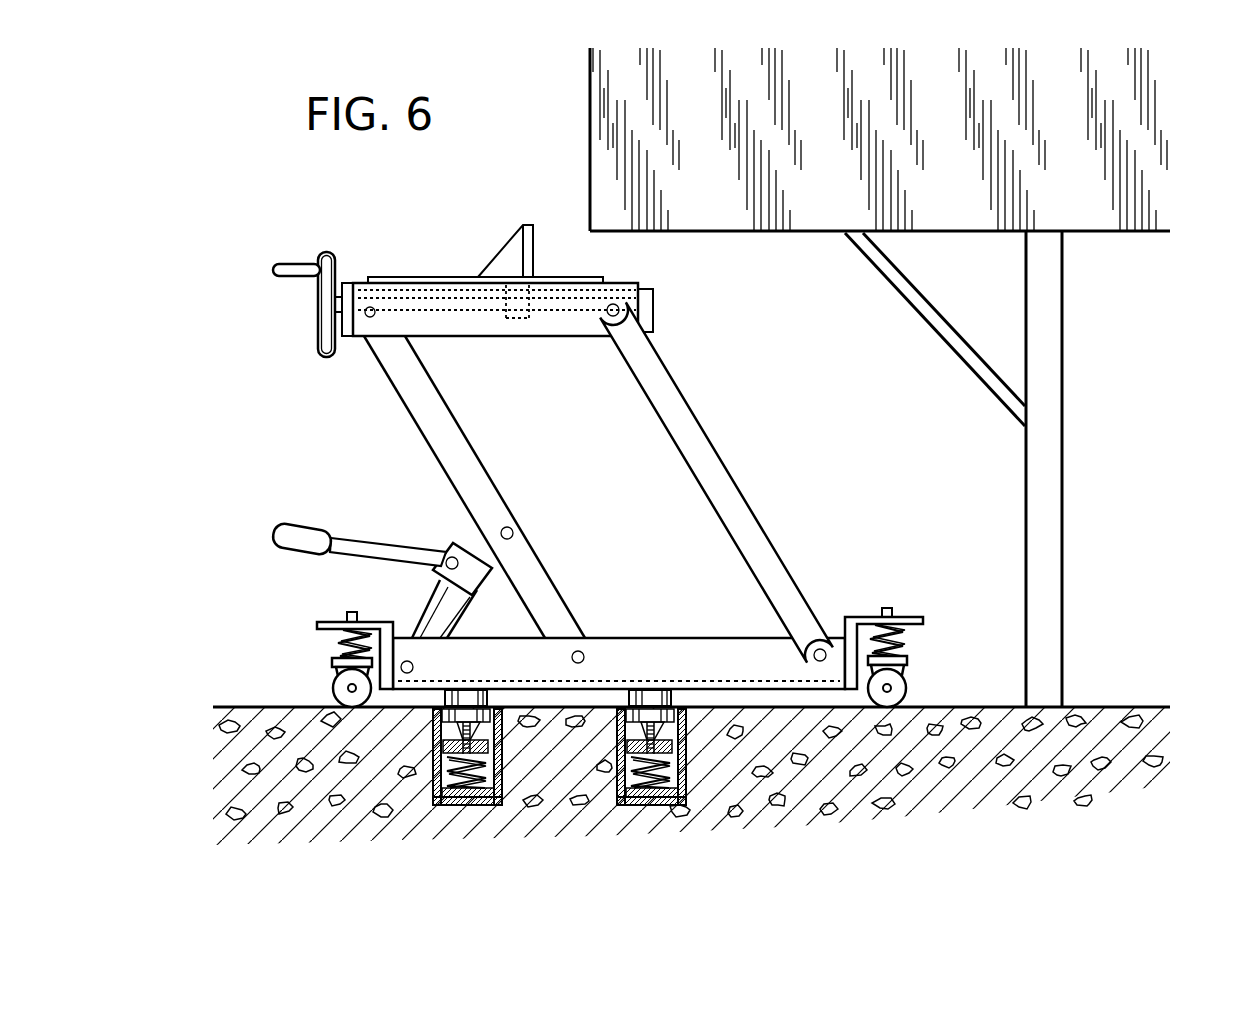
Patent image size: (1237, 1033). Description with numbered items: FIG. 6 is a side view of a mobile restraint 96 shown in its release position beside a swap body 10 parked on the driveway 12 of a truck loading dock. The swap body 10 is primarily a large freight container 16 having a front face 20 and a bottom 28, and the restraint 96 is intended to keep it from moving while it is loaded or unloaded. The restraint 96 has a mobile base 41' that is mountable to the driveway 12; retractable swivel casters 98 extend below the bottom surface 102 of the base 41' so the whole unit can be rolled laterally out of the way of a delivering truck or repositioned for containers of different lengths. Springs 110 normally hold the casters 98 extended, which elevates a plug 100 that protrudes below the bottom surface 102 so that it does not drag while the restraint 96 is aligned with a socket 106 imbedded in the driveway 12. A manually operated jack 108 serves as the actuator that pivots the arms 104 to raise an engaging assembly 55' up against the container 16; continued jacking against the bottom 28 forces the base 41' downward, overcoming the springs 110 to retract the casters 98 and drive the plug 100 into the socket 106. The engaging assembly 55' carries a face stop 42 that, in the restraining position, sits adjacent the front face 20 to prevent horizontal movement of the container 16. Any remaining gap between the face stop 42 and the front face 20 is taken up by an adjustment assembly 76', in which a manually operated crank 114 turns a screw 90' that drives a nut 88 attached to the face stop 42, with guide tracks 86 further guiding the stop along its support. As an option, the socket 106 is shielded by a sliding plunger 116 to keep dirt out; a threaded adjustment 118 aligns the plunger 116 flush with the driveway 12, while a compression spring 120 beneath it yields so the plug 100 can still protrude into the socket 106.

The swap body 10 is at (1137, 290).
The driveway 12 is at (1134, 704).
The freight container 16 is at (998, 235).
The front face 20 is at (590, 197).
The bottom 28 is at (760, 234).
The mobile base 41' is at (619, 640).
The face stop 42 is at (503, 250).
The engaging assembly 55' is at (244, 341).
The adjustment assembly 76' is at (298, 332).
The guide tracks 86 is at (567, 276).
The nut 88 is at (517, 320).
The screw 90' is at (474, 479).
The restraint 96 is at (828, 435).
The retractable swivel casters 98 is at (333, 690).
The plug 100 is at (443, 693).
The bottom surface 102 is at (733, 690).
The arms 104 is at (793, 577).
The socket 106 is at (460, 803).
The manually operated jack 108 is at (452, 545).
The springs 110 is at (337, 650).
The manually operated crank 114 is at (295, 263).
The sliding plunger 116 is at (683, 737).
The threaded adjustment 118 is at (617, 722).
The compression spring 120 is at (617, 778).